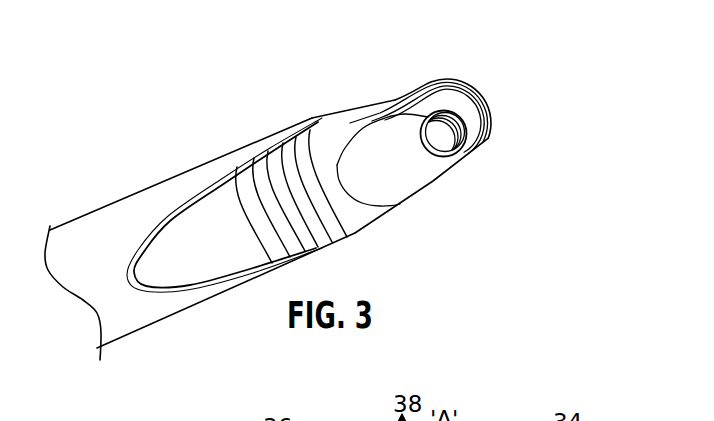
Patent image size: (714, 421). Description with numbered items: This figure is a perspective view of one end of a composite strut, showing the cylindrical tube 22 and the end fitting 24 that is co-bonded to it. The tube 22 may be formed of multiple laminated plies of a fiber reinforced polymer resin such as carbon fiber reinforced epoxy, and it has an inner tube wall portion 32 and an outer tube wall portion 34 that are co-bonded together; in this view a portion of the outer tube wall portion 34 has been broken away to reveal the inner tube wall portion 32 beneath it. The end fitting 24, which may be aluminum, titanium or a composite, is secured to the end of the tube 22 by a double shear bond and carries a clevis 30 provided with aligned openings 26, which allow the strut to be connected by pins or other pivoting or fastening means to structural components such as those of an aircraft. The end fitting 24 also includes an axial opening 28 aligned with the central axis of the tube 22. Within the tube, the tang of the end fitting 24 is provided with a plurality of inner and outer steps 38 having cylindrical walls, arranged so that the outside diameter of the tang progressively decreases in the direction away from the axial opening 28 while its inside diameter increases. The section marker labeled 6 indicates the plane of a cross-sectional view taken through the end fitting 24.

The cylindrical tube 22 is at (122, 323).
The end fitting 24 is at (368, 210).
The opening 26 is at (462, 148).
The axial opening 28 is at (483, 110).
The clevis 30 is at (482, 140).
The inner tube wall portion 32 is at (213, 262).
The outer tube wall portion 34 is at (92, 232).
The steps 38 is at (265, 182).
The section line 6- 6 is at (413, 50).